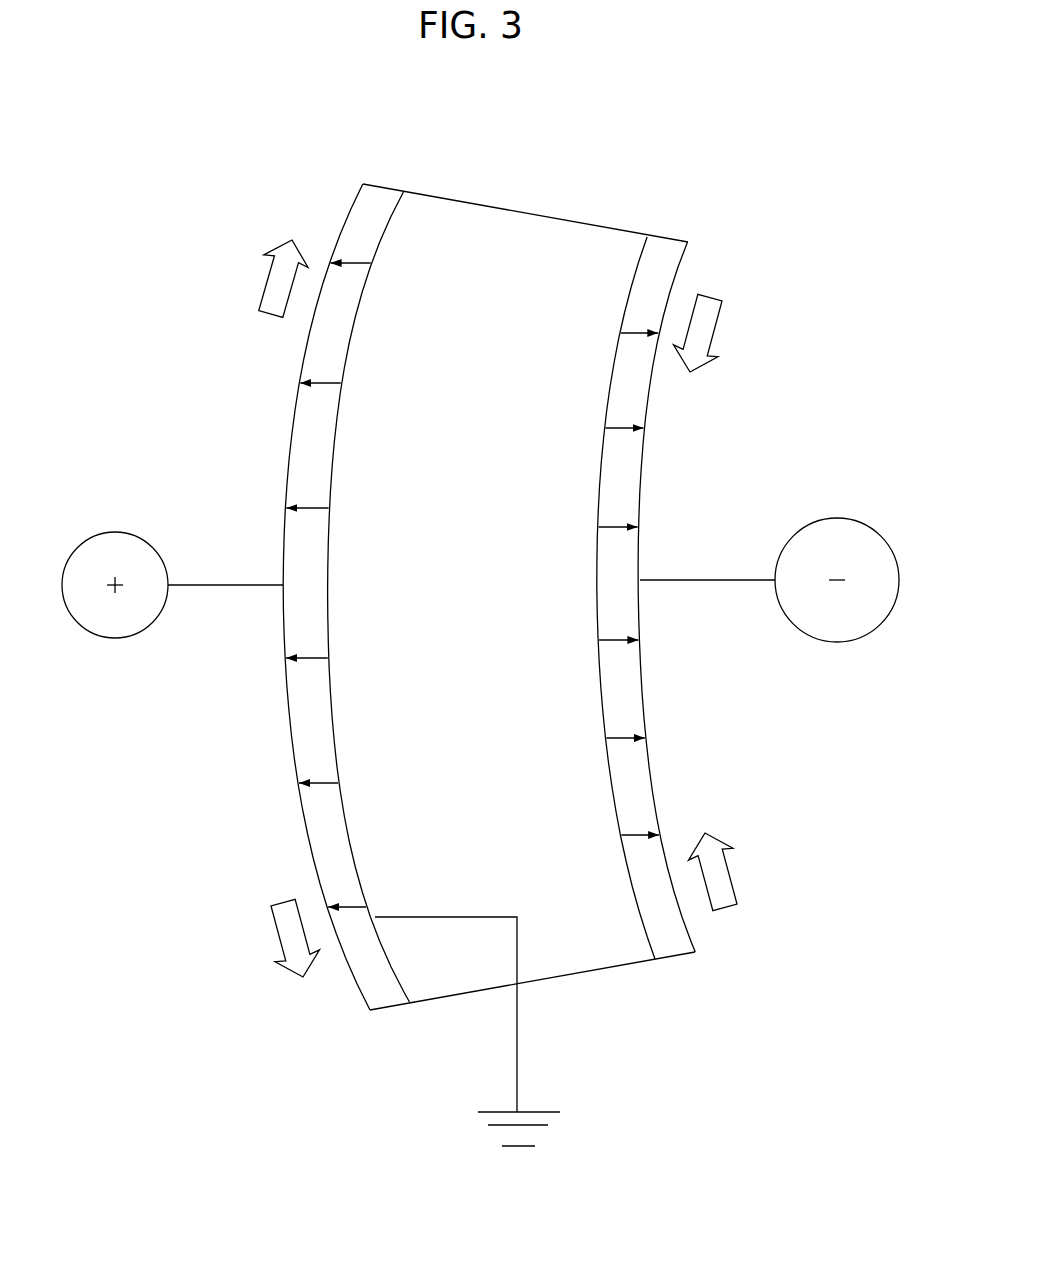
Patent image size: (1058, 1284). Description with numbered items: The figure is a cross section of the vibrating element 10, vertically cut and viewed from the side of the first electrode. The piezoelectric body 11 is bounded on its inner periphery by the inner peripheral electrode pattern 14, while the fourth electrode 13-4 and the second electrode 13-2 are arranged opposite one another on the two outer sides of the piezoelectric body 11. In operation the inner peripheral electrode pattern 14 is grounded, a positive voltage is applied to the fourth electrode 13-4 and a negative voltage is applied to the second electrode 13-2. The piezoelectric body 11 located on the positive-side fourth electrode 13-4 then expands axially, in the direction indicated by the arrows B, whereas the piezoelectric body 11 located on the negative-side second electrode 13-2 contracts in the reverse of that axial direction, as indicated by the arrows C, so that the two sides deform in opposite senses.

The vibrating element 10 is at (745, 130).
The piezoelectric body 11 is at (538, 248).
The second electrode 13-2 is at (640, 478).
The fourth electrode 13-4 is at (288, 457).
The inner peripheral electrode pattern 14 is at (335, 722).
The arrows B is at (273, 287).
The arrows C is at (708, 320).